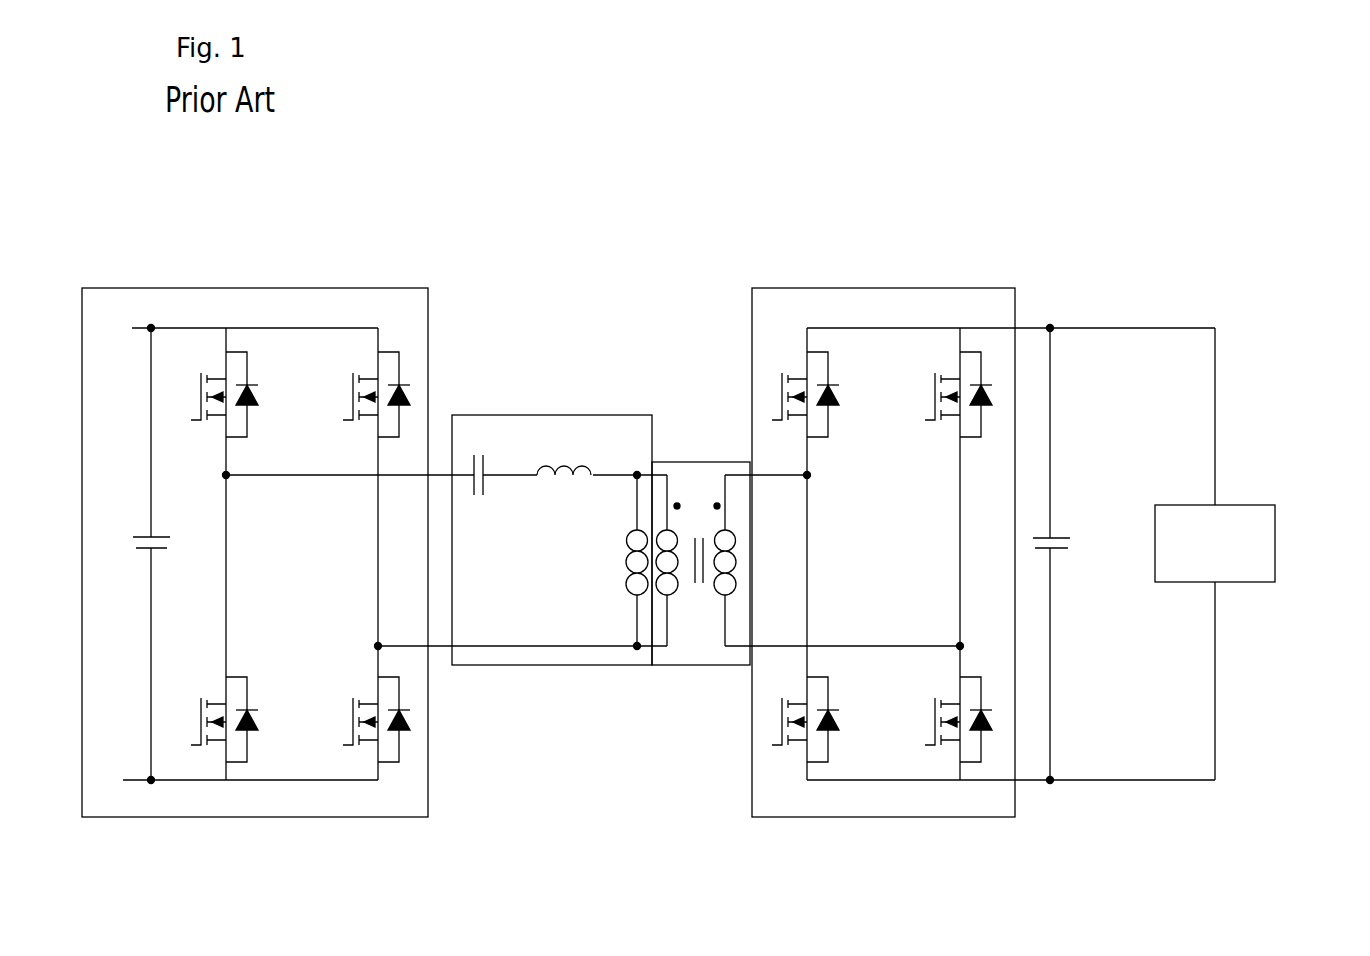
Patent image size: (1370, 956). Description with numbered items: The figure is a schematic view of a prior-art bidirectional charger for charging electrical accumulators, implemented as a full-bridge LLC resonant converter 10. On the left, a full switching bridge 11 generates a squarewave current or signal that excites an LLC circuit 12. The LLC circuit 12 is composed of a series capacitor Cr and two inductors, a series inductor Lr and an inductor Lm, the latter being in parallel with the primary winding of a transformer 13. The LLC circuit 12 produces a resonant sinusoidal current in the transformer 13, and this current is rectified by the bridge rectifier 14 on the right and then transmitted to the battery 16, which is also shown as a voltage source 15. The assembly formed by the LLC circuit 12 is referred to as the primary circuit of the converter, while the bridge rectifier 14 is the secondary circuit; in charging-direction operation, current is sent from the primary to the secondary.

The full-bridge LLC resonant converter 10 is at (862, 270).
The full switching bridge 11 is at (295, 803).
The LLC circuit 12 is at (575, 615).
The transformer 13 is at (693, 645).
The bridge rectifier 14 is at (907, 802).
The voltage source 15 is at (1062, 530).
The battery 16 is at (1275, 560).